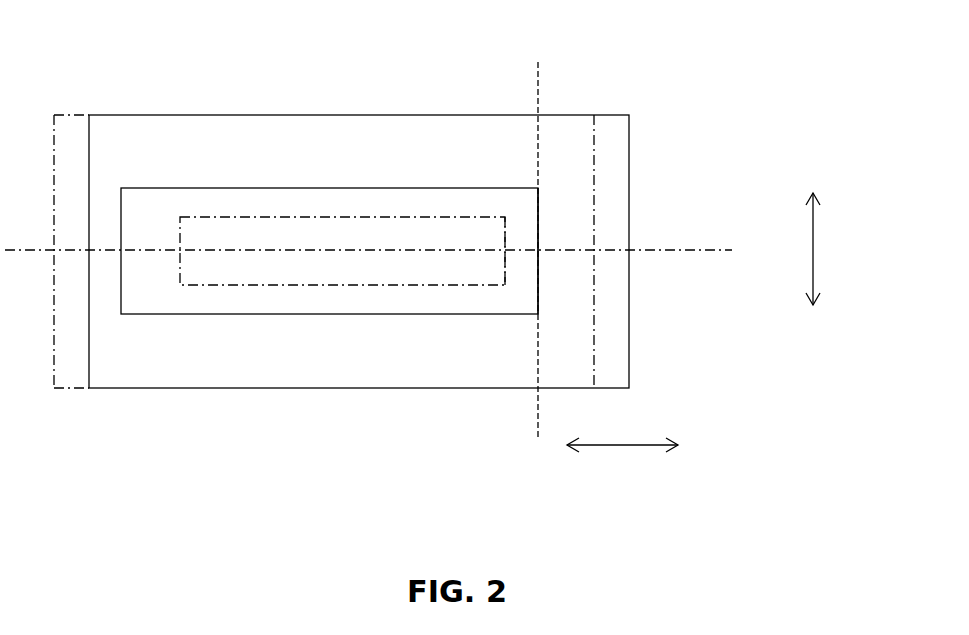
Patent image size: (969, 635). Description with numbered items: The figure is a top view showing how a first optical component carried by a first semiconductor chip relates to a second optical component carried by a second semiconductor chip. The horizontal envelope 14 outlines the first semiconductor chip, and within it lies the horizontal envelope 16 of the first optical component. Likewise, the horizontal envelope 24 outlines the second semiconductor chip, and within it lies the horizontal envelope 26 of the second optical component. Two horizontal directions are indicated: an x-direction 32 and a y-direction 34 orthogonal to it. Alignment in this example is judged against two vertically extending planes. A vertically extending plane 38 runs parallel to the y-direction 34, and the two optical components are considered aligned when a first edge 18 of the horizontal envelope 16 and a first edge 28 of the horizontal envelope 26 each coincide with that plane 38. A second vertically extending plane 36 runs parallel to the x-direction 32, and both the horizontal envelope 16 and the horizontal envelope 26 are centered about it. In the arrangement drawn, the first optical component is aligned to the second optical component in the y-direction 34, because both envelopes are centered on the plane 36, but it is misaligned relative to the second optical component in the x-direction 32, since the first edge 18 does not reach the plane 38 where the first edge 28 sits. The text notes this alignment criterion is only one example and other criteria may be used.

The horizontal envelope of semiconductor chip 14 is at (594, 188).
The horizontal envelope of optical component 16 is at (295, 285).
The first edge 18 is at (505, 233).
The horizontal envelope of semiconductor chip 24 is at (629, 136).
The horizontal envelope of optical component 26 is at (426, 314).
The first edge 28 is at (538, 280).
The x-direction 32 is at (622, 445).
The y-direction 34 is at (814, 250).
The vertically extending plane 36 is at (710, 251).
The vertically extending plane 38 is at (540, 73).